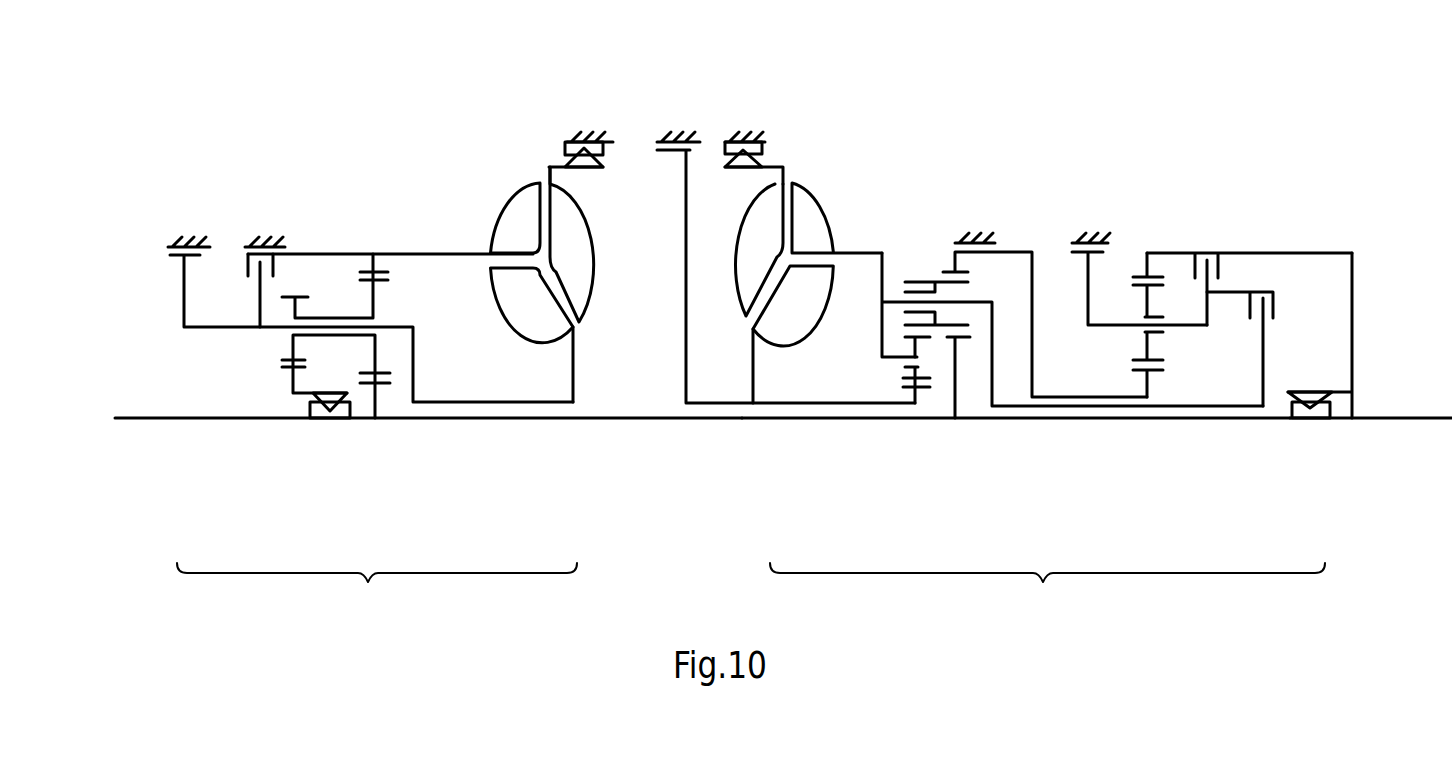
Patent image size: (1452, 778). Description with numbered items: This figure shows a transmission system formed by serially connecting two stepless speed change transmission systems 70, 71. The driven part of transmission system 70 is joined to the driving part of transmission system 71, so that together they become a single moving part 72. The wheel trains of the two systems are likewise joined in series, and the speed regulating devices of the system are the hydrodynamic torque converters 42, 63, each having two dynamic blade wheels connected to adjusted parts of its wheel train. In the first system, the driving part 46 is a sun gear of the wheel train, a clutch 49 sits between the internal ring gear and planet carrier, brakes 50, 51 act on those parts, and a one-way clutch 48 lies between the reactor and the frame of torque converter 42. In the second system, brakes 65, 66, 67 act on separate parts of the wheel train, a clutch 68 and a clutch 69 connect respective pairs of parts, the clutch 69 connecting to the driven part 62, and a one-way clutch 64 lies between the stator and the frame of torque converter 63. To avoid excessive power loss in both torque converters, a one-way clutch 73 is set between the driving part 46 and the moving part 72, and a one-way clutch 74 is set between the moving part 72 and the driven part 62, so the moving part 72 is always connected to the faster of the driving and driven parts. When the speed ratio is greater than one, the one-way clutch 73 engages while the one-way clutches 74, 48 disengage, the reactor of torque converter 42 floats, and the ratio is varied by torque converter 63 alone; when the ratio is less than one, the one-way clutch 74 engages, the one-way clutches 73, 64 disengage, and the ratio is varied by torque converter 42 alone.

The speed regulating device 42 is at (503, 187).
The driving part 46 is at (220, 418).
The one-way clutch 48 is at (578, 142).
The clutch 49 is at (243, 262).
The brake 50 is at (264, 238).
The brake 51 is at (180, 240).
The driven part 62 is at (1440, 418).
The speed regulating device 63 is at (840, 210).
The one-way clutch 64 is at (750, 142).
The brake 65 is at (682, 138).
The brake 66 is at (975, 240).
The brake 67 is at (1088, 238).
The clutch 68 is at (1277, 304).
The clutch 69 is at (1219, 277).
The transmission system 70 is at (377, 591).
The transmission system 71 is at (1047, 590).
The moving part 72 is at (742, 418).
The one-way clutch 73 is at (335, 418).
The one-way clutch 74 is at (1322, 418).